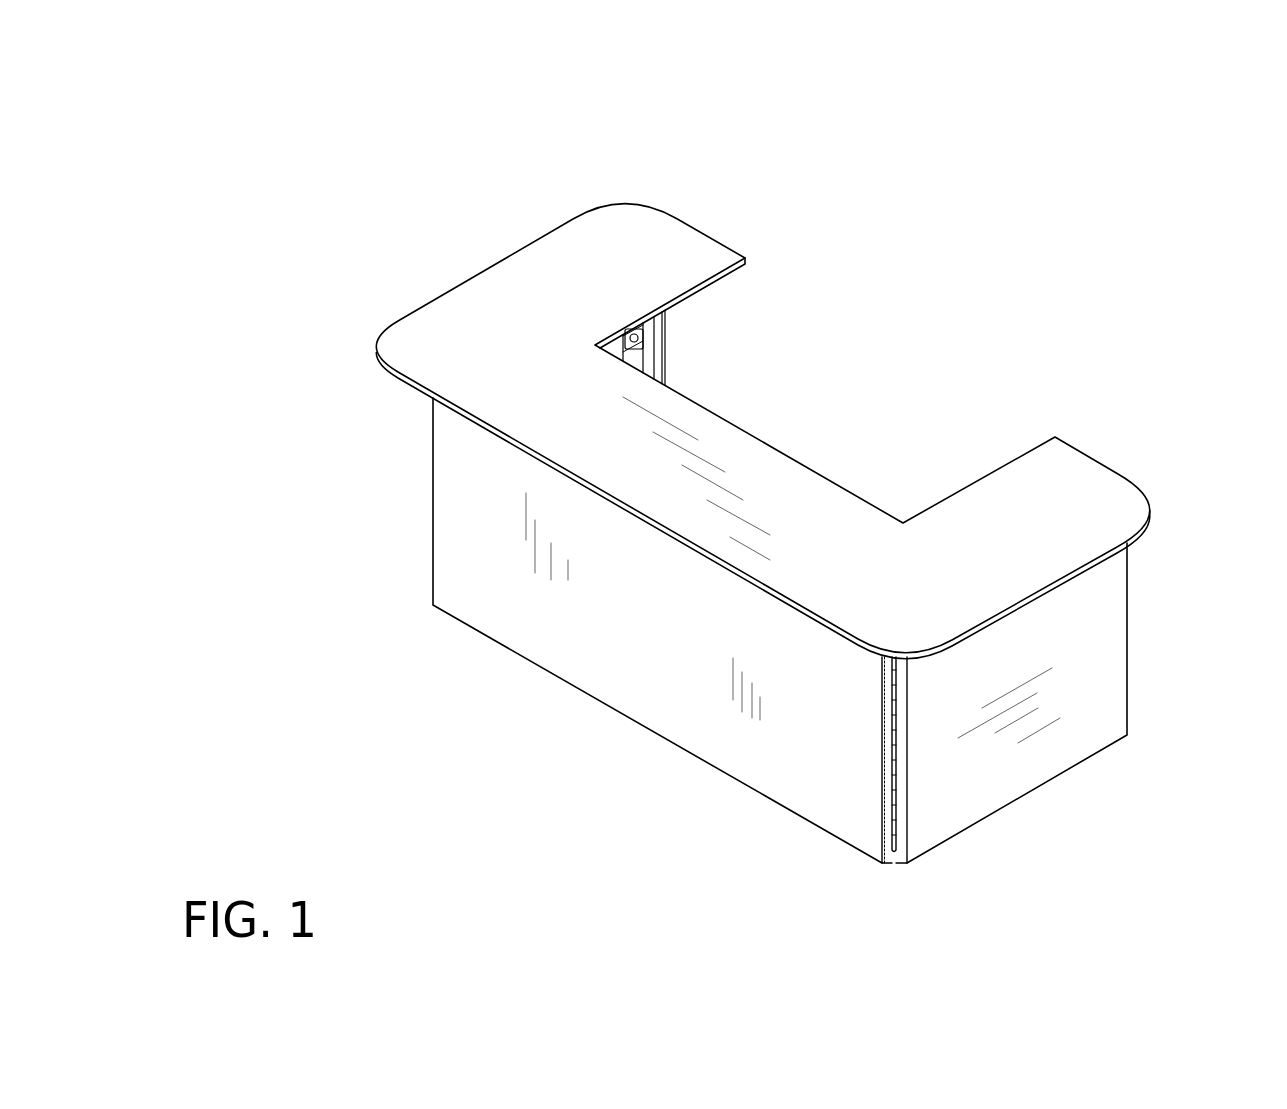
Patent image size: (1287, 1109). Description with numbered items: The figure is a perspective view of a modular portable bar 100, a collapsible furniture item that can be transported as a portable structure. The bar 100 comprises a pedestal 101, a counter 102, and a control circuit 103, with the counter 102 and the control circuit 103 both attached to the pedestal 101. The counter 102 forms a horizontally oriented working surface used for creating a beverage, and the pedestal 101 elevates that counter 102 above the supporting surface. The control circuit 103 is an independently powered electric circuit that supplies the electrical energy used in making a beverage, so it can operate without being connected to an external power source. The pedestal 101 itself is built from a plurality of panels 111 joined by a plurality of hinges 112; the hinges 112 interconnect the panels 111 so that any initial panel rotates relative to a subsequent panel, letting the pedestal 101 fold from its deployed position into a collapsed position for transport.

The modular portable bar 100 is at (776, 529).
The pedestal 101 is at (593, 698).
The counter 102 is at (1080, 473).
The control circuit 103 is at (641, 341).
The plurality of panels 111 is at (780, 695).
The plurality of hinges 112 is at (951, 789).